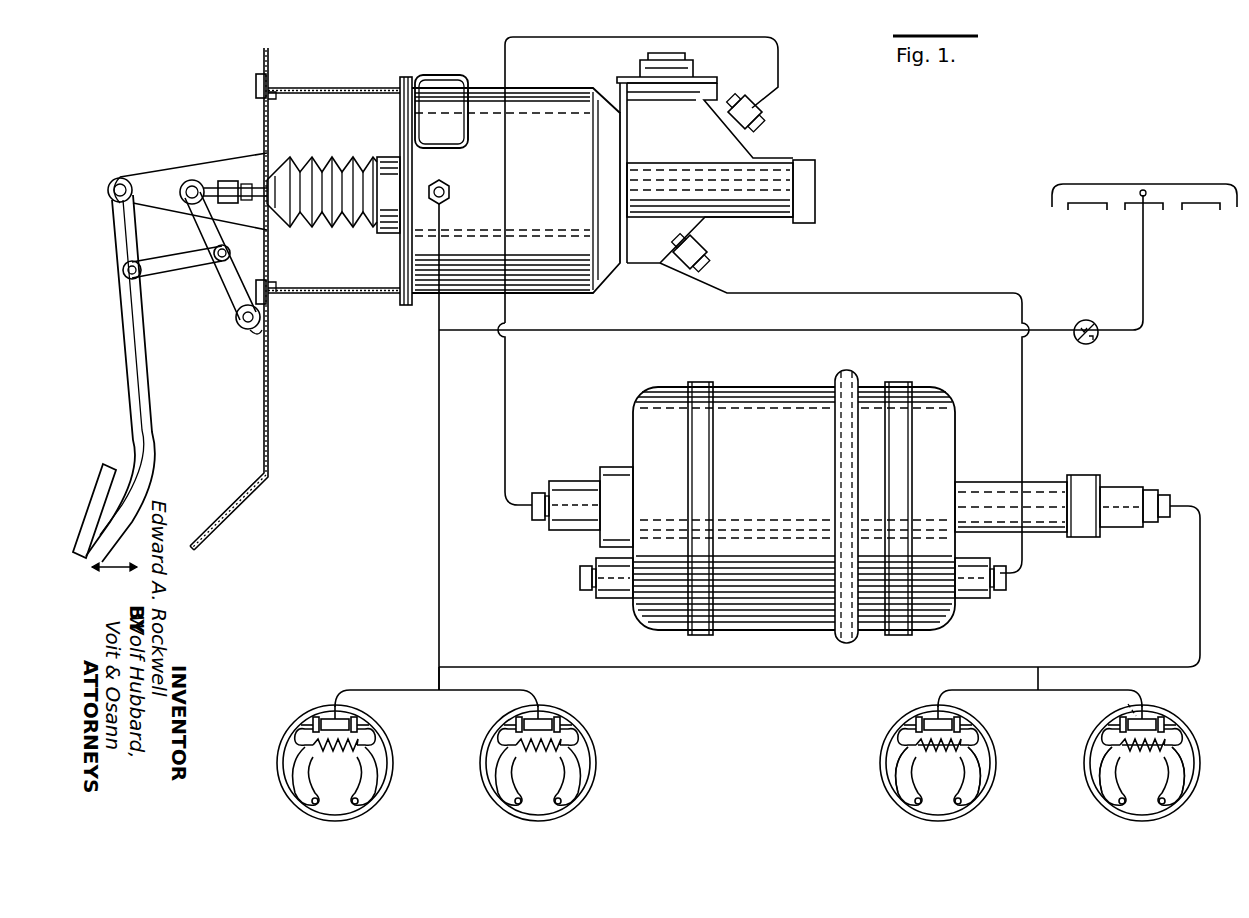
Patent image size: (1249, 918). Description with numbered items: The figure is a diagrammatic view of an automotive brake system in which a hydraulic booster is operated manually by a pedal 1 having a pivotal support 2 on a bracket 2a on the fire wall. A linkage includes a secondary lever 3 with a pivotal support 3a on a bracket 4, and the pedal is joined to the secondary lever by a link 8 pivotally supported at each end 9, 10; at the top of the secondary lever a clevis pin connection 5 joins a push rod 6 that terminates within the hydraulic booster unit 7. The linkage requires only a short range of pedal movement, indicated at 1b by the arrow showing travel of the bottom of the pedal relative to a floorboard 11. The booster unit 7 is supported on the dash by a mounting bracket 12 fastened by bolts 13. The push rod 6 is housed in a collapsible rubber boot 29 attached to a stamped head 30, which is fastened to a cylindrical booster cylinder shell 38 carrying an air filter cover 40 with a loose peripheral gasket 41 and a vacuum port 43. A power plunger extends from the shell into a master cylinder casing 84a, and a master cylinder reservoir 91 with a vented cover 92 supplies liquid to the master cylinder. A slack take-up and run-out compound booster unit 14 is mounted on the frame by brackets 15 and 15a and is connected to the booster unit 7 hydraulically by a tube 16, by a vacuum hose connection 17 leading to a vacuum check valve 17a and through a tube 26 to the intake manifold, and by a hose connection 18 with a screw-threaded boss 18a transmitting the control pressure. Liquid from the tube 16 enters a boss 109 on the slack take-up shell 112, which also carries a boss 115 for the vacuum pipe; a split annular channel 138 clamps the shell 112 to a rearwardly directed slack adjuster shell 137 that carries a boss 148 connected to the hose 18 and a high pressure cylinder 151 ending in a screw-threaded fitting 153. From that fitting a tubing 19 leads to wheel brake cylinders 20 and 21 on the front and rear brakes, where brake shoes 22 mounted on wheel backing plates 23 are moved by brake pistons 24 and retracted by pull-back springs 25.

The pedal 1 is at (132, 372).
The range of movement 1b is at (112, 567).
The pivotal support 2 is at (110, 186).
The bracket 2a is at (163, 176).
The secondary lever 3 is at (226, 282).
The pivotal support 3a is at (238, 326).
The bracket 4 is at (256, 336).
The clevis pin connection 5 is at (208, 183).
The push rod 6 is at (243, 182).
The hydraulic booster unit 7 is at (408, 66).
The connecting link 8 is at (168, 258).
The pivotal support 9 is at (123, 267).
The pivotal support 10 is at (229, 252).
The floorboard 11 is at (236, 520).
The mounting bracket 12 is at (342, 88).
The bolts 13 is at (256, 82).
The slack take-up and run-out compound booster unit 14 is at (664, 373).
The bracket 15 is at (704, 395).
The bracket 15a is at (900, 394).
The tube 16 is at (780, 55).
The vacuum hose connection 17 is at (892, 330).
The vacuum check valve 17a is at (1082, 320).
The hose connection 18 is at (822, 293).
The screw-threaded boss 18a is at (682, 265).
The tubing 19 is at (1200, 578).
The wheel brake cylinders 20 is at (930, 715).
The wheel brake cylinders 21 is at (330, 715).
The brake shoes 22 is at (882, 768).
The wheel backing plates 23 is at (908, 808).
The brake pistons 24 is at (1128, 704).
The pull-back springs 25 is at (940, 746).
The tube 26 is at (1146, 258).
The collapsible rubber boot 29 is at (326, 162).
The stamped head 30 is at (404, 126).
The booster cylinder shell 38 is at (544, 104).
The air filter cover 40 is at (447, 76).
The loose peripheral gasket 41 is at (468, 86).
The vacuum port 43 is at (448, 186).
The master cylinder casing 84a is at (770, 207).
The master cylinder reservoir 91 is at (690, 100).
The vented cover 92 is at (652, 56).
The boss 109 is at (586, 498).
The slack take-up shell 112 is at (784, 610).
The boss 115 is at (610, 600).
The rearwardly directed slack adjuster shell 137 is at (874, 608).
The split annular channel 138 is at (838, 372).
The boss 148 is at (962, 590).
The high pressure cylinder 151 is at (1032, 494).
The screw-threaded fitting 153 is at (1082, 493).